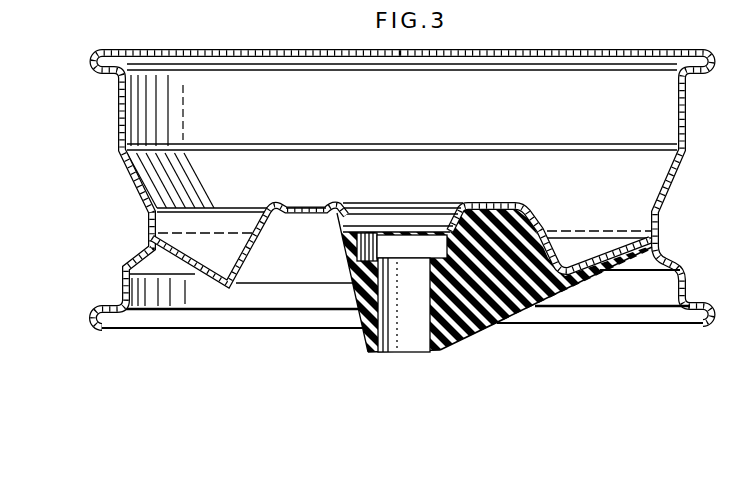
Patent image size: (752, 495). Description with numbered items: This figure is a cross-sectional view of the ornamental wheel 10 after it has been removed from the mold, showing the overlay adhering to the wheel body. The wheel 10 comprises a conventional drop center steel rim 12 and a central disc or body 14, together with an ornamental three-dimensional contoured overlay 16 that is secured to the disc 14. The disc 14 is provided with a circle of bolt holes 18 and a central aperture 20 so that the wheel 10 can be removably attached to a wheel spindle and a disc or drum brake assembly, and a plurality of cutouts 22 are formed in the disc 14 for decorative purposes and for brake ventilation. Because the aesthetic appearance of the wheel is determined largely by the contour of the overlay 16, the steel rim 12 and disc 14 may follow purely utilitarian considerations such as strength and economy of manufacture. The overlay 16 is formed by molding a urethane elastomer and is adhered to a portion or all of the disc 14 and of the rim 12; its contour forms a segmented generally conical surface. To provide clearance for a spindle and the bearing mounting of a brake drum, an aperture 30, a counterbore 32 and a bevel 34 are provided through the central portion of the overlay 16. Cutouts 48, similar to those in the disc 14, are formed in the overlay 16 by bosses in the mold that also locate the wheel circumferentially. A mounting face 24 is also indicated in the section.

The ornamental wheel 10 is at (108, 152).
The drop center steel rim 12 is at (140, 192).
The central disc 14 is at (545, 224).
The ornamental overlay 16 is at (482, 344).
The bolt holes 18 is at (309, 207).
The central aperture 20 is at (413, 209).
The cutouts 22 is at (194, 250).
The mounting face 24 is at (527, 308).
The aperture 30 is at (408, 338).
The counterbore 32 is at (362, 251).
The bevel 34 is at (362, 240).
The cutouts 48 is at (190, 265).